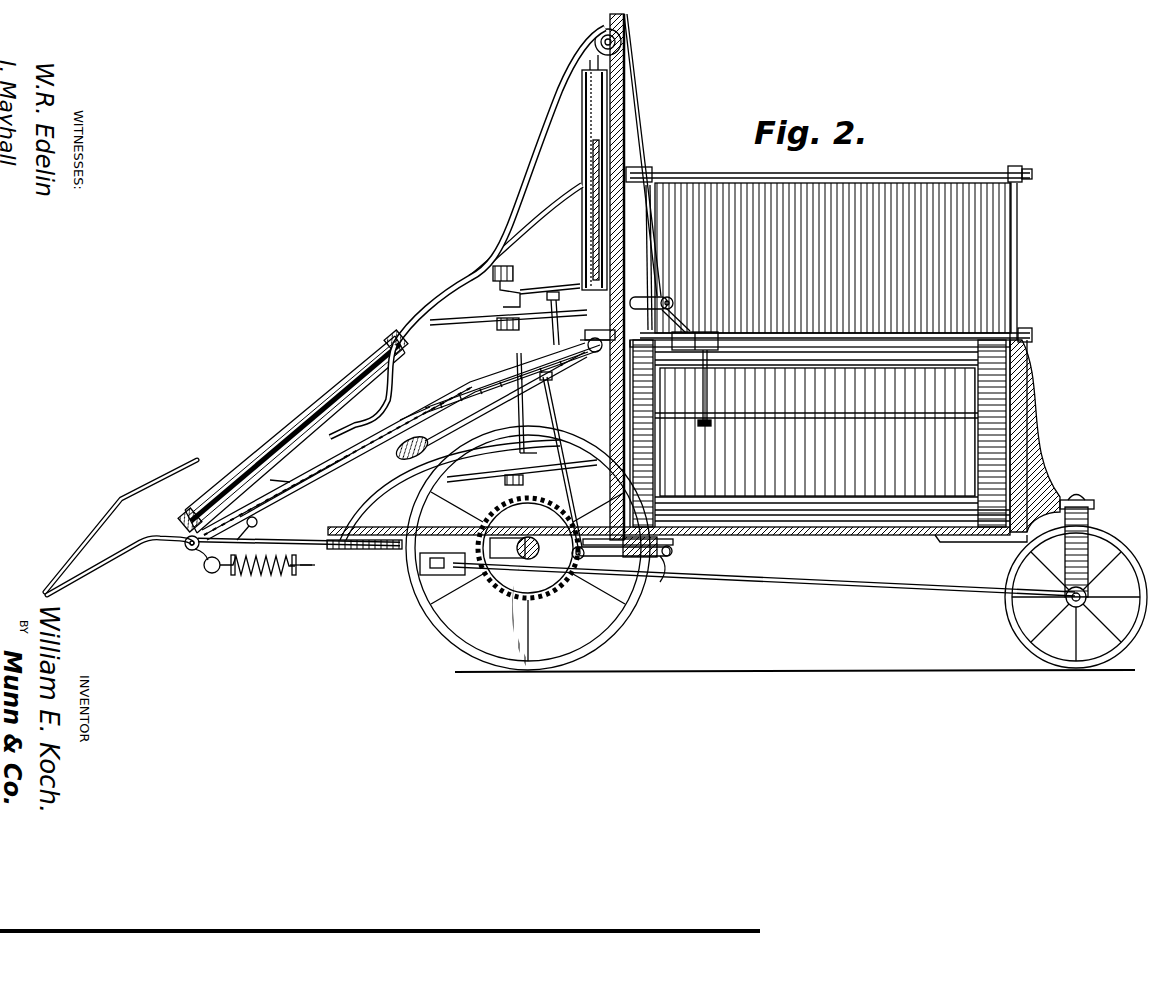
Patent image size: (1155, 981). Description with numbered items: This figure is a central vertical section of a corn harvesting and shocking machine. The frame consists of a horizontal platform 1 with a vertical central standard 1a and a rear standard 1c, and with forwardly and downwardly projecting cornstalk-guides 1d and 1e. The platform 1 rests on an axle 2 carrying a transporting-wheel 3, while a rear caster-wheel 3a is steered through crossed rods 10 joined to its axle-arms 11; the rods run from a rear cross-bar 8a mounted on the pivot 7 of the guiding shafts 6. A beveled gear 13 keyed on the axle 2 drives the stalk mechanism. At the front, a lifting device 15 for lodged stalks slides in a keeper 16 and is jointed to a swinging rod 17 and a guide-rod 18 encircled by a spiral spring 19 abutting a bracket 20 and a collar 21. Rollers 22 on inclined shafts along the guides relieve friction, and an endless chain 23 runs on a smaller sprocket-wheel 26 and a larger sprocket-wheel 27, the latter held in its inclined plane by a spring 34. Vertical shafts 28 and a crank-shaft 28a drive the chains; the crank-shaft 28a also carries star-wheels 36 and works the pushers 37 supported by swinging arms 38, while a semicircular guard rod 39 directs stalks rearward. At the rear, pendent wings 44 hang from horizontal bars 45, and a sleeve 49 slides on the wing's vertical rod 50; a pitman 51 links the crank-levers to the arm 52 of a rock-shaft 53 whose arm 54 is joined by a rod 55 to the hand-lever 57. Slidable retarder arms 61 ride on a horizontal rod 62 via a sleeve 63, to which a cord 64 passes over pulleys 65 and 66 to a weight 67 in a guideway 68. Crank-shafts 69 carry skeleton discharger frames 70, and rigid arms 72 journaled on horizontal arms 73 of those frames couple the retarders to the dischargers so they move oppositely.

The horizontal platform 1 is at (800, 535).
The vertical central standard 1a is at (620, 132).
The rear standard 1c is at (1035, 436).
The cornstalk-guide 1d is at (303, 486).
The cornstalk-guide 1e is at (430, 312).
The axle 2 is at (522, 560).
The transporting-wheel 3 is at (418, 600).
The rear caster-wheel 3a is at (1130, 548).
The shaft 6 is at (582, 195).
The pivot 7 is at (380, 527).
The rear cross-bar 8a is at (440, 575).
The crossed rod 10 is at (915, 585).
The axle-arm 11 is at (1062, 600).
The beveled gear 13 is at (470, 510).
The lifting device 15 is at (118, 505).
The keeper 16 is at (188, 550).
The swinging rod 17 is at (260, 535).
The guide-rod 18 is at (312, 565).
The spiral spring 19 is at (255, 573).
The bracket 20 is at (292, 575).
The collar 21 is at (212, 573).
The roller 22 is at (318, 415).
The endless traveling chain 23 is at (410, 418).
The sprocket-wheel 26 is at (276, 470).
The sprocket-wheel 27 is at (540, 330).
The vertical shaft 28 is at (520, 270).
The crank-shaft 28a is at (520, 408).
The spring 34 is at (455, 400).
The star-wheel 36 is at (460, 323).
The pusher 37 is at (560, 287).
The swinging arm 38 is at (592, 366).
The guard rod 39 is at (360, 490).
The pendent wing 44 is at (836, 261).
The horizontal bar 45 is at (905, 173).
The sleeve 49 is at (653, 380).
The vertical rod 50 is at (640, 230).
The pitman 51 is at (673, 542).
The arm 52 is at (662, 578).
The rock-shaft 53 is at (635, 560).
The arm 54 is at (600, 558).
The rod 55 is at (574, 486).
The hand-lever 57 is at (440, 433).
The slidable arm 61 is at (718, 334).
The horizontal rod 62 is at (910, 333).
The sleeve 63 is at (686, 325).
The cord 64 is at (644, 163).
The pulley 65 is at (672, 300).
The pulley 66 is at (614, 42).
The weight 67 is at (593, 245).
The guideway 68 is at (500, 186).
The crank-shaft 69 is at (880, 365).
The skeleton frame 70 is at (858, 497).
The rigid arm 72 is at (708, 380).
The arm 73 is at (875, 418).